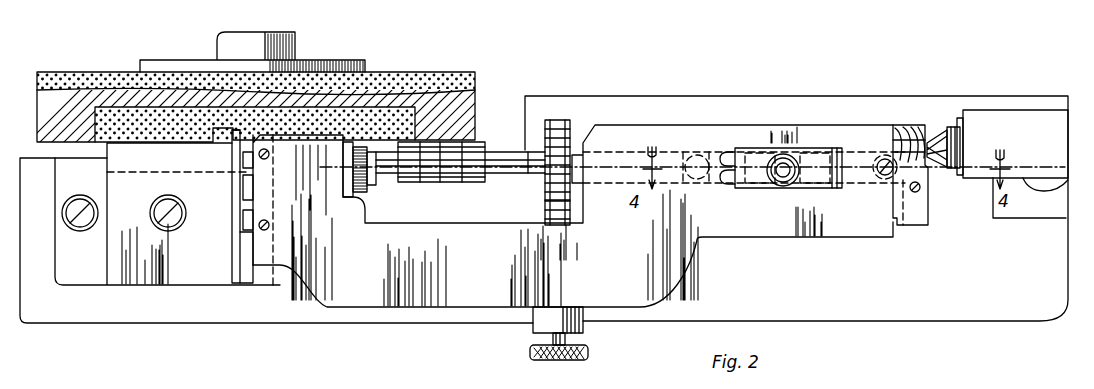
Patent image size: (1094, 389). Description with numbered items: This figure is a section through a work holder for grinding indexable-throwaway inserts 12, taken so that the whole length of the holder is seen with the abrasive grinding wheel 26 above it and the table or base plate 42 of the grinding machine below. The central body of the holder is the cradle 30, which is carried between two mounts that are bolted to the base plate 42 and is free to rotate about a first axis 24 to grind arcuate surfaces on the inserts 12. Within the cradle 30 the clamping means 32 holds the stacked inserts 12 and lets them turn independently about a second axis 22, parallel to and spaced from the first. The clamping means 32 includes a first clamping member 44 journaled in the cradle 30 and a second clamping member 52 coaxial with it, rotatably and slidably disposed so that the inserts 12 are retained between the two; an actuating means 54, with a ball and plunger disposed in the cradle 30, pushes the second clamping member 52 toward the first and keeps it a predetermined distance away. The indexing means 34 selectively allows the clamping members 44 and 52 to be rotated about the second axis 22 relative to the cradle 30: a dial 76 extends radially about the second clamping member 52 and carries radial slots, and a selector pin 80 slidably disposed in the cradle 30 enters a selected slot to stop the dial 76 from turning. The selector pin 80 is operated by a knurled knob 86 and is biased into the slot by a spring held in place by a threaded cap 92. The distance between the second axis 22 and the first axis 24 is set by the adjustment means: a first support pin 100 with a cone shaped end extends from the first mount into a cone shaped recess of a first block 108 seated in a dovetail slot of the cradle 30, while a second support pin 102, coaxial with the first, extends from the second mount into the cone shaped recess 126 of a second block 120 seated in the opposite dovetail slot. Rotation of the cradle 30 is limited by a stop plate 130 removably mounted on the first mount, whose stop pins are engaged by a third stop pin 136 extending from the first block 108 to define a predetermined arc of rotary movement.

The indexable-throwaway inserts 12 is at (479, 141).
The second axis 22 is at (529, 165).
The first axis 24 is at (598, 123).
The abrasive grinding wheel 26 is at (443, 72).
The cradle 30 is at (730, 125).
The clamping means 32 is at (396, 189).
The indexing means 34 is at (532, 201).
The table or base plate 42 is at (993, 318).
The first clamping member 44 is at (360, 153).
The second clamping member 52 is at (500, 152).
The actuating means 54 is at (807, 138).
The dial 76 is at (562, 121).
The selector pin 80 is at (565, 338).
The knurled knob 86 is at (588, 352).
The threaded cap 92 is at (572, 334).
The first support pin 100 is at (246, 125).
The second support pin 102 is at (937, 138).
The first block 108 is at (272, 135).
The second block 120 is at (893, 130).
The cone shaped recess 126 is at (930, 130).
The stop plate 130 is at (237, 220).
The third stop pin 136 is at (248, 240).